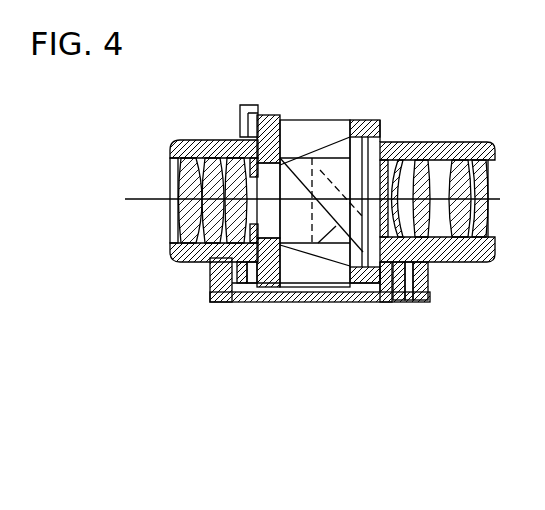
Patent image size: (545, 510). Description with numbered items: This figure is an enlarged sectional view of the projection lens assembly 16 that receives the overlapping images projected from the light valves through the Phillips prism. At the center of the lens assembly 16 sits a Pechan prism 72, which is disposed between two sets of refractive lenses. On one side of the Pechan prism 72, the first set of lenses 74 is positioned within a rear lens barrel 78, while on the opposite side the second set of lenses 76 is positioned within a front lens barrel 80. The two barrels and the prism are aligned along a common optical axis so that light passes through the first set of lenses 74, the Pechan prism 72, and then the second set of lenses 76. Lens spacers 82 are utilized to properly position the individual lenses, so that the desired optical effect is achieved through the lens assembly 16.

The lens assembly 16 is at (425, 107).
The Pechan prism 72 is at (300, 245).
The first set of lenses 74 is at (193, 140).
The second set of lenses 76 is at (433, 210).
The rear lens barrel 78 is at (212, 140).
The front lens barrel 80 is at (452, 142).
The lens spacers 82 is at (428, 265).